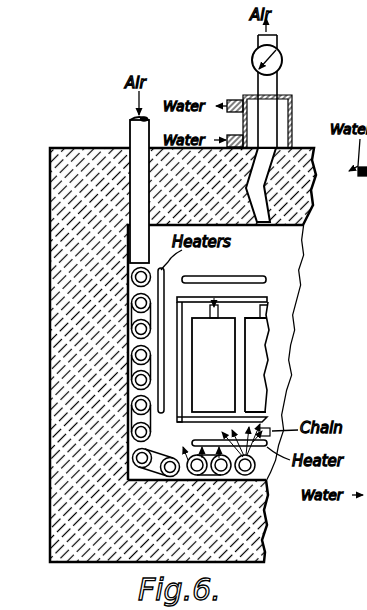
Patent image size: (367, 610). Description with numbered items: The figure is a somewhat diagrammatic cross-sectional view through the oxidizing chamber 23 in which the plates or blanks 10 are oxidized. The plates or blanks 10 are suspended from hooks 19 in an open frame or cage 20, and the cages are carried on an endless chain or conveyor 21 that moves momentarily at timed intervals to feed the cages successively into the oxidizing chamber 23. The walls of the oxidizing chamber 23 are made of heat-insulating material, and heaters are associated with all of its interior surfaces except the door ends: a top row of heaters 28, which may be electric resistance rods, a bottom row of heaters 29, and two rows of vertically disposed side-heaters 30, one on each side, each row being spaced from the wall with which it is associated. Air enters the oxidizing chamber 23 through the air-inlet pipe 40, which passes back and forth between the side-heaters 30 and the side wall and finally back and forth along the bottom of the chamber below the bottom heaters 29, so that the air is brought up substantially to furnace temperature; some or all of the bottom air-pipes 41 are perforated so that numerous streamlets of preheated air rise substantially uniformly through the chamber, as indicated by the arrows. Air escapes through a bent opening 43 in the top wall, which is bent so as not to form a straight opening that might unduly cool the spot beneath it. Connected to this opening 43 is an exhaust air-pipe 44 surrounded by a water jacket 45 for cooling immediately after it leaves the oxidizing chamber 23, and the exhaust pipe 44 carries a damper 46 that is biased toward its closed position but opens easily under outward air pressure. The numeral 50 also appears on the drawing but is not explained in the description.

The plates or blanks 10 is at (221, 374).
The hooks 19 is at (222, 298).
The open frame or cage 20 is at (267, 300).
The endless chain or conveyor 21 is at (272, 414).
The oxidizing chamber 23 is at (297, 245).
The top row of heaters 28 is at (256, 277).
The bottom row of heaters 29 is at (269, 443).
The side-heaters 30 is at (157, 335).
The air-inlet pipe 40 is at (130, 132).
The bottom air-pipes 41 is at (255, 470).
The bent opening 43 is at (272, 198).
The exhaust air-pipe 44 is at (278, 83).
The water jacket 45 is at (293, 108).
The damper 46 is at (283, 61).
The furnace 50 is at (366, 300).